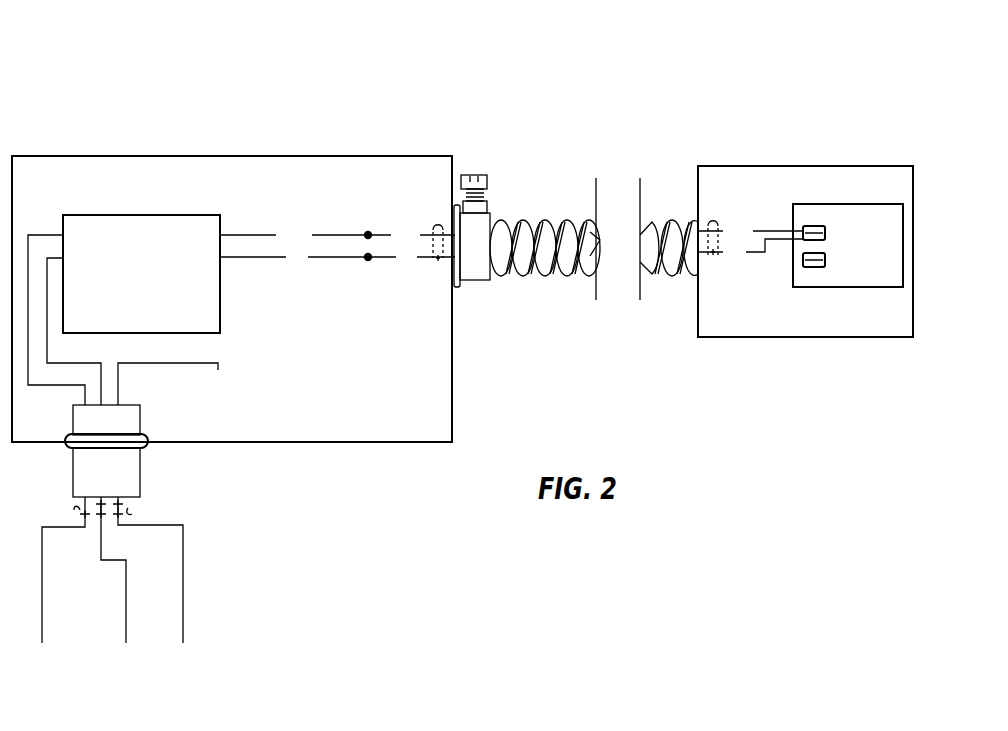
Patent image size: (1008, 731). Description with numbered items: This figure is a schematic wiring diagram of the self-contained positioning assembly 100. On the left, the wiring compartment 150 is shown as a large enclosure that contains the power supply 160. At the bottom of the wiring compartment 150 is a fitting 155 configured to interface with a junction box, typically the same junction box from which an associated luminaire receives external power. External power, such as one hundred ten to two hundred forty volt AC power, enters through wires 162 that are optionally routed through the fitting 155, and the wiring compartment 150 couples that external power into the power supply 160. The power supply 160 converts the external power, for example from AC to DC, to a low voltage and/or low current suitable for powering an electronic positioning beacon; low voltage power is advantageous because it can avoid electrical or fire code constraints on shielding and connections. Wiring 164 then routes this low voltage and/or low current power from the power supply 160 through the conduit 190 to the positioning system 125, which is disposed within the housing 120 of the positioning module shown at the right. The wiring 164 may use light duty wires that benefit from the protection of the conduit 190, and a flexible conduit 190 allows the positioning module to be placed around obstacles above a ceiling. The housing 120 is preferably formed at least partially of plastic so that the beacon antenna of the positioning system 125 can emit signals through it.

The positioning assembly 100 is at (108, 62).
The housing 120 is at (838, 325).
The positioning system 125 is at (800, 215).
The wiring compartment 150 is at (265, 157).
The fitting 155 is at (88, 462).
The power supply 160 is at (215, 310).
The wires 162 is at (132, 514).
The wiring 164 is at (437, 262).
The conduit 190 is at (548, 228).